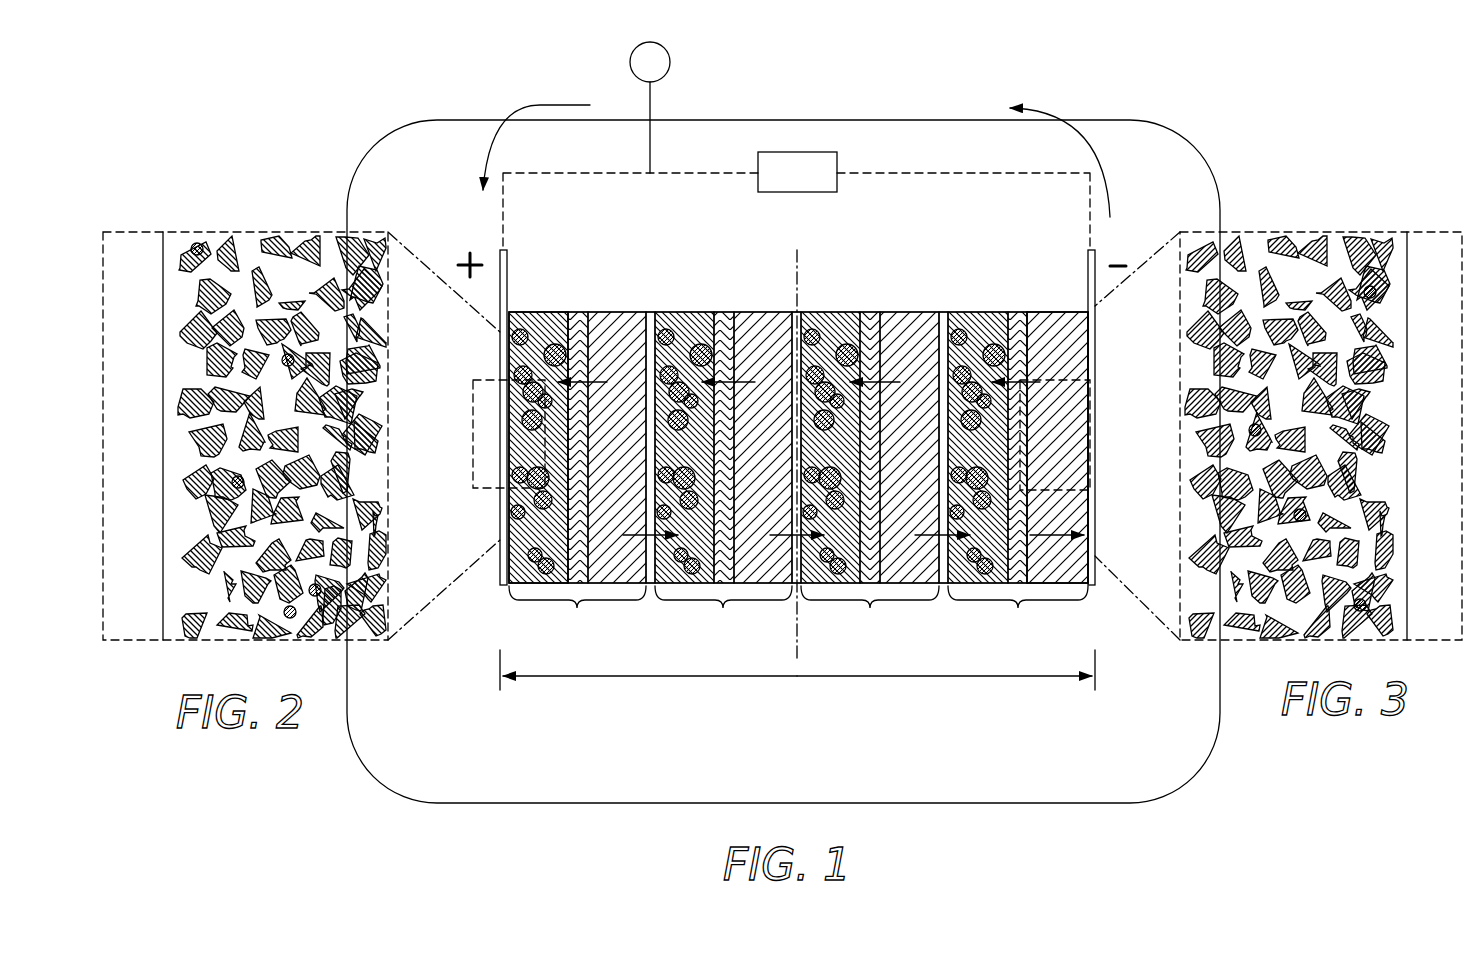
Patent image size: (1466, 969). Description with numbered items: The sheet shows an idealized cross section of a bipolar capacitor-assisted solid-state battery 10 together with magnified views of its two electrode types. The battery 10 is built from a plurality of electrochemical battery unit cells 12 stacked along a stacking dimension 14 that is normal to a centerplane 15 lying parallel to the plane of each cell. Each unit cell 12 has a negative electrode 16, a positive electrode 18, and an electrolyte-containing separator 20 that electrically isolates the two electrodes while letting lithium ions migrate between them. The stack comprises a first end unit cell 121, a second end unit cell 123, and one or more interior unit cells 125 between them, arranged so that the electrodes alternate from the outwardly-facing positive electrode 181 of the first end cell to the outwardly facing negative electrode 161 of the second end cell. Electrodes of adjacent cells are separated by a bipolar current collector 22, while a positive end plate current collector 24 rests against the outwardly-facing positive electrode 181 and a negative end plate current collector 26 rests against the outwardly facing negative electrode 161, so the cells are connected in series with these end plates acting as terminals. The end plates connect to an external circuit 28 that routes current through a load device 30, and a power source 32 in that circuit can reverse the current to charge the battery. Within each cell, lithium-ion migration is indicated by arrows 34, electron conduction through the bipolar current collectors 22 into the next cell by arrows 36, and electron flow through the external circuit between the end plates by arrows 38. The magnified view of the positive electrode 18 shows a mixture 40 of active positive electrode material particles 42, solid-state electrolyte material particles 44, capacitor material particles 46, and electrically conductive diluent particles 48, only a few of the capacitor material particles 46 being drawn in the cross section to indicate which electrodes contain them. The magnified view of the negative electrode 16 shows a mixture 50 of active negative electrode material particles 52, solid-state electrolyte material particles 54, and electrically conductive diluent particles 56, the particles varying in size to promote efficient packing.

In FIG. 1, the bipolar capacitor-assisted solid-state battery 10 is at (448, 232).
In FIG. 1, the electrochemical battery unit cell 12 is at (798, 614).
In FIG. 1, the first end unit cell 121 is at (577, 614).
In FIG. 1, the interior unit cell 125 is at (797, 614).
In FIG. 1, the second end unit cell 123 is at (1018, 614).
In FIG. 1, the stacking dimension 14 is at (808, 676).
In FIG. 1, the centerplane 15 is at (797, 648).
In FIG. 1, the negative electrode 16 is at (618, 320).
In FIG. 1, the outwardly facing negative electrode 161 is at (1075, 565).
In FIG. 1, the positive electrode 18 is at (536, 320).
In FIG. 1, the outwardly-facing positive electrode 181 is at (512, 572).
In FIG. 1, the separator 20 is at (578, 320).
In FIG. 1, the bipolar current collector 22 is at (651, 320).
In FIG. 1, the positive end plate current collector 24 is at (508, 262).
In FIG. 1, the negative end plate current collector 26 is at (1096, 262).
In FIG. 1, the external circuit 28 is at (790, 173).
In FIG. 1, the load device 30 is at (797, 172).
In FIG. 1, the power source 32 is at (655, 72).
In FIG. 1, the arrows 34 is at (603, 382).
In FIG. 1, the arrows 36 is at (644, 532).
In FIG. 1, the arrows 38 is at (565, 105).
In FIG. 2, the mixture 40 is at (247, 221).
In FIG. 2, the active positive electrode material particles 42 is at (288, 300).
In FIG. 2, the solid-state electrolyte material particles 44 is at (195, 335).
In FIG. 1, the capacitor material particles 46 is at (530, 428).
In FIG. 2, the capacitor material particles 46 is at (195, 245).
In FIG. 2, the electrically conductive diluent particles 48 is at (230, 370).
In FIG. 3, the mixture 50 is at (1268, 221).
In FIG. 3, the active negative electrode material particles 52 is at (1320, 340).
In FIG. 3, the solid-state electrolyte material particles 54 is at (1345, 490).
In FIG. 3, the electrically conductive diluent particles 56 is at (1372, 292).